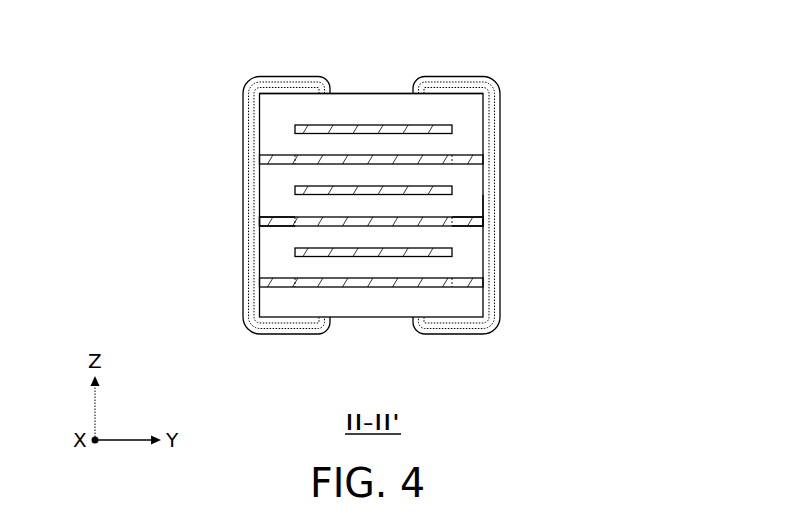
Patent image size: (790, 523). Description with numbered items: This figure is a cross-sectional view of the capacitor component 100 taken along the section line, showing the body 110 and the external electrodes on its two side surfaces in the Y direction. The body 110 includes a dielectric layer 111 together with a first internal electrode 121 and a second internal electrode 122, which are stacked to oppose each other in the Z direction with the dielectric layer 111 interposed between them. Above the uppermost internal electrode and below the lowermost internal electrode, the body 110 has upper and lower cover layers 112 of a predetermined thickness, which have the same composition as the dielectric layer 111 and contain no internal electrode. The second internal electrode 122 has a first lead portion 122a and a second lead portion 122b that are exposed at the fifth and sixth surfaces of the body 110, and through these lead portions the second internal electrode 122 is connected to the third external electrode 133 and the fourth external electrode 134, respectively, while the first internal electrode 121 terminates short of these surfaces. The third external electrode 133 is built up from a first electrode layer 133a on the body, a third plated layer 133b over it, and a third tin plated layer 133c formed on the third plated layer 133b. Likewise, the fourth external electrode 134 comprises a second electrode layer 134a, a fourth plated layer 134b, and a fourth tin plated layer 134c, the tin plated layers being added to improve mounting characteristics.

The capacitor component 100 is at (100, 26).
The body 110 is at (486, 295).
The dielectric layer 111 is at (470, 203).
The cover layer 112 is at (278, 137).
The first internal electrode 121 is at (447, 190).
The second internal electrode 122 is at (435, 221).
The first lead portion 122a is at (487, 219).
The second lead portion 122b is at (278, 220).
The third external electrode 133 is at (543, 186).
The first electrode layer 133a is at (488, 110).
The third plated layer 133b is at (483, 84).
The third tin plated layer 133c is at (465, 83).
The fourth external electrode 134 is at (202, 186).
The second electrode layer 134a is at (253, 106).
The fourth plated layer 134b is at (262, 77).
The fourth tin plated layer 134c is at (281, 83).